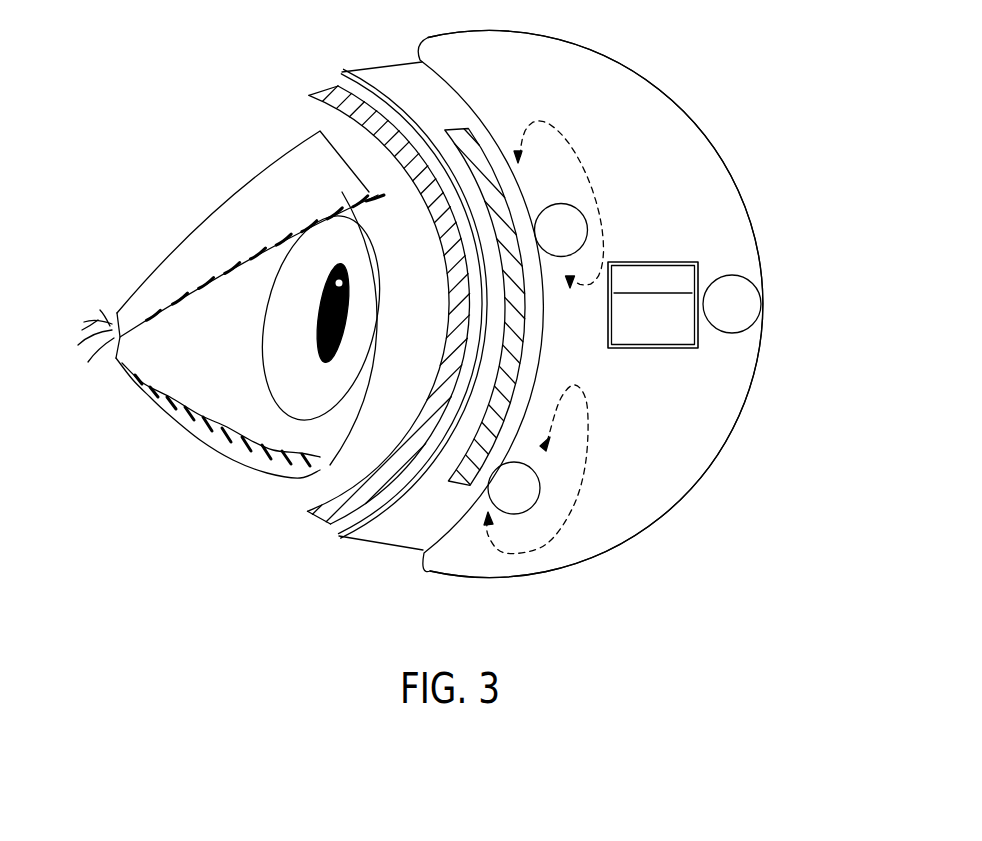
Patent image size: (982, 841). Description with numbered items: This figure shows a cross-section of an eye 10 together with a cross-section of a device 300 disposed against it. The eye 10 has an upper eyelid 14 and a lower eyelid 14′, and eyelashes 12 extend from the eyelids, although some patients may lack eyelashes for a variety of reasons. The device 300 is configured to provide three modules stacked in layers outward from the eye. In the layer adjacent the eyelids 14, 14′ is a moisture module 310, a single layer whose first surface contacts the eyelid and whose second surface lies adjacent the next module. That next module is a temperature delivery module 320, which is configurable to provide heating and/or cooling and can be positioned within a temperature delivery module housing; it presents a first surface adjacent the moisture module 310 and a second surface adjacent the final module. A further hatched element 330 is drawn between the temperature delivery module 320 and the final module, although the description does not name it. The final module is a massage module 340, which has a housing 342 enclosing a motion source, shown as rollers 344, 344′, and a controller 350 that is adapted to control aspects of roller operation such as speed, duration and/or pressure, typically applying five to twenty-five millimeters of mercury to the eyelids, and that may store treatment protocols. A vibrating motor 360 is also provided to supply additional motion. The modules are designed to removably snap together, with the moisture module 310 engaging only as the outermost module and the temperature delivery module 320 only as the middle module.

The eye 10 is at (391, 246).
The eyelashes 12 is at (112, 318).
The upper eyelid 14 is at (267, 180).
The lower eyelid 14′ is at (268, 463).
The device 300 is at (751, 492).
The moisture module 310 is at (323, 523).
The temperature delivery module 320 is at (383, 544).
The transducer strip 330 is at (480, 128).
The massage module 340 is at (675, 82).
The housing 342 is at (740, 186).
The roller 344 is at (587, 230).
The roller 344′ is at (538, 497).
The controller 350 is at (652, 350).
The vibrating motor 360 is at (761, 304).